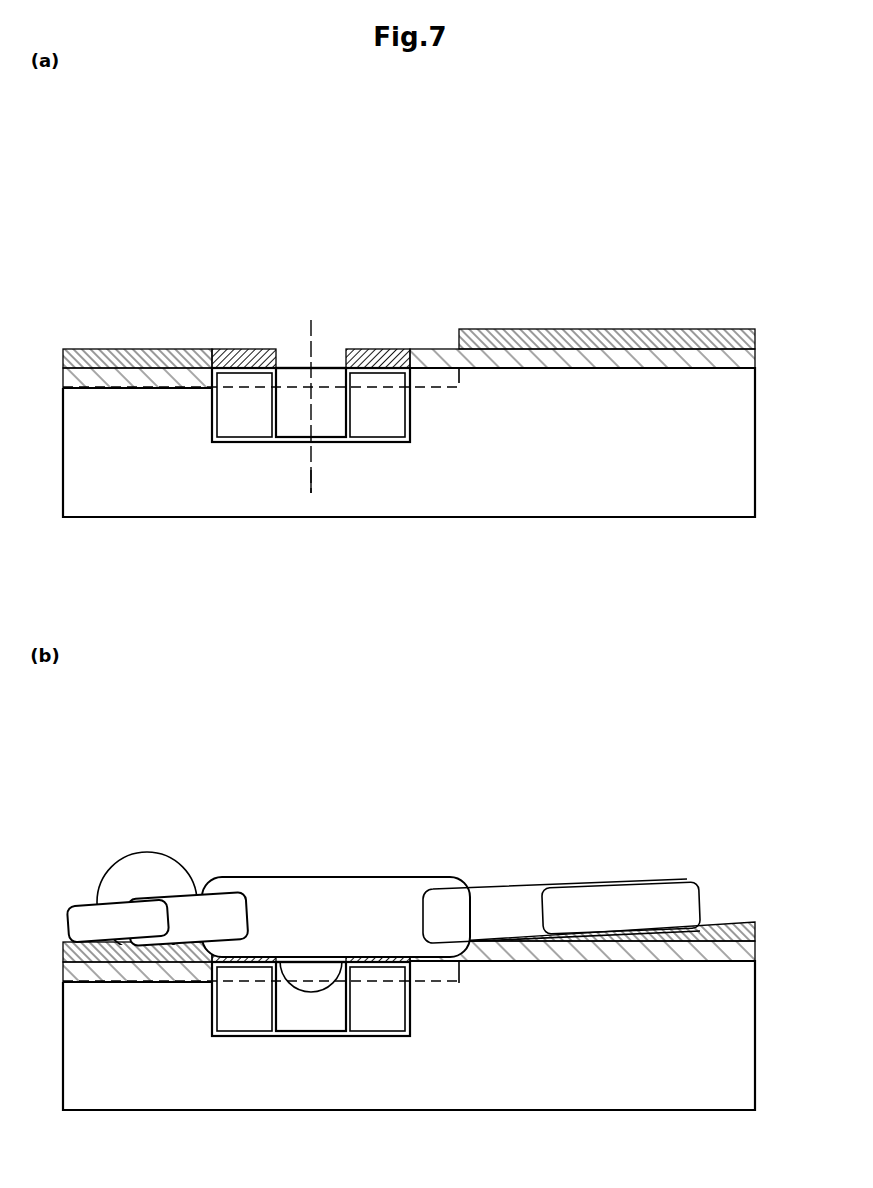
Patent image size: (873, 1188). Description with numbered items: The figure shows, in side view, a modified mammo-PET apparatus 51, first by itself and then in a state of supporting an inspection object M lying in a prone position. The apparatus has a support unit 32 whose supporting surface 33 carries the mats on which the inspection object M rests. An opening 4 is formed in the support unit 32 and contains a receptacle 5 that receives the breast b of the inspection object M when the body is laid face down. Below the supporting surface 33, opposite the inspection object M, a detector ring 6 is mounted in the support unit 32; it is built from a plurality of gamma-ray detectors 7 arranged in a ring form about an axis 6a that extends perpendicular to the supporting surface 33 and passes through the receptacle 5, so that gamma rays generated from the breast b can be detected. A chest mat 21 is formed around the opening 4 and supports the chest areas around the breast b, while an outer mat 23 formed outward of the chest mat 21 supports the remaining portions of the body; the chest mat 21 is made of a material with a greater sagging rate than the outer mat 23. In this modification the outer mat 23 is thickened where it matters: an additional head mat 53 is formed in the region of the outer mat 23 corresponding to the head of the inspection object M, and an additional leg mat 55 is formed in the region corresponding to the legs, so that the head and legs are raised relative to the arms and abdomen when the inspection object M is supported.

The opening 4 is at (323, 345).
The receptacle 5 is at (293, 443).
The detector ring 6 is at (412, 416).
The axis 6a is at (312, 478).
The gamma-ray detector 7 is at (237, 417).
The chest mat 21 is at (240, 352).
The outer mat 23 is at (128, 388).
The support unit 32 is at (600, 518).
The supporting surface 33 is at (88, 385).
The mammo-PET apparatus 51 is at (534, 256).
The additional head mat 53 is at (143, 350).
The additional leg mat 55 is at (578, 330).
The inspection object M is at (660, 886).
The breast b is at (297, 967).